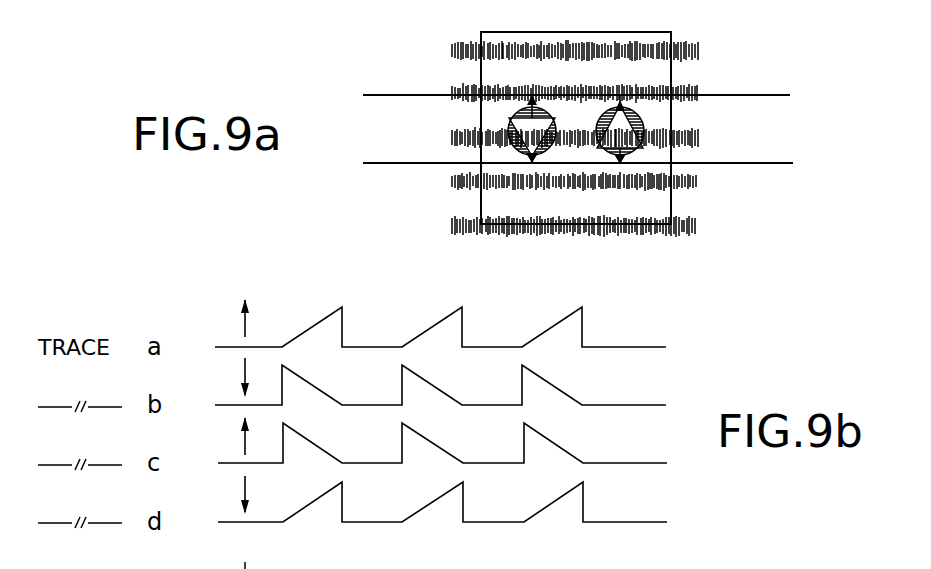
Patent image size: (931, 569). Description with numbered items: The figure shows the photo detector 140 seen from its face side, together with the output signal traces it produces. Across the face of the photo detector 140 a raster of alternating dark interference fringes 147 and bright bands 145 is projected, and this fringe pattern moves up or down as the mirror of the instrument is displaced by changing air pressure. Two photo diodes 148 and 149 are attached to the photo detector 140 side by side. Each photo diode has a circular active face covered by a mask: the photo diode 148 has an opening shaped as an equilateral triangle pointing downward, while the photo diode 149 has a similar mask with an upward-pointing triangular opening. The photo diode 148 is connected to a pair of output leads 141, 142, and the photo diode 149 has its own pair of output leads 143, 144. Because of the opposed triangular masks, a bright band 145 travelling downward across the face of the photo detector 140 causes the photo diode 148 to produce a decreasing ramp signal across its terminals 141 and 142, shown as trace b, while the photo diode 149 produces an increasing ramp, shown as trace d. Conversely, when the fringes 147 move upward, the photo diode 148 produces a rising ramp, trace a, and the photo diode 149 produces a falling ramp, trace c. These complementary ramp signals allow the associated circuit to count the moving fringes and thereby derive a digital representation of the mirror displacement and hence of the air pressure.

In FIG. 9a, the photo detector 140 is at (633, 32).
In FIG. 9a, the output lead 141 is at (474, 96).
In FIG. 9a, the output lead 142 is at (470, 164).
In FIG. 9a, the output lead 143 is at (725, 96).
In FIG. 9a, the output lead 144 is at (728, 162).
In FIG. 9a, the bright band 145 is at (465, 70).
In FIG. 9a, the interference fringes 147 is at (697, 85).
In FIG. 9a, the photo diode 148 is at (510, 125).
In FIG. 9b, the photo diode 148 is at (424, 352).
In FIG. 9a, the photo diode 149 is at (644, 118).
In FIG. 9b, the photo diode 149 is at (425, 469).